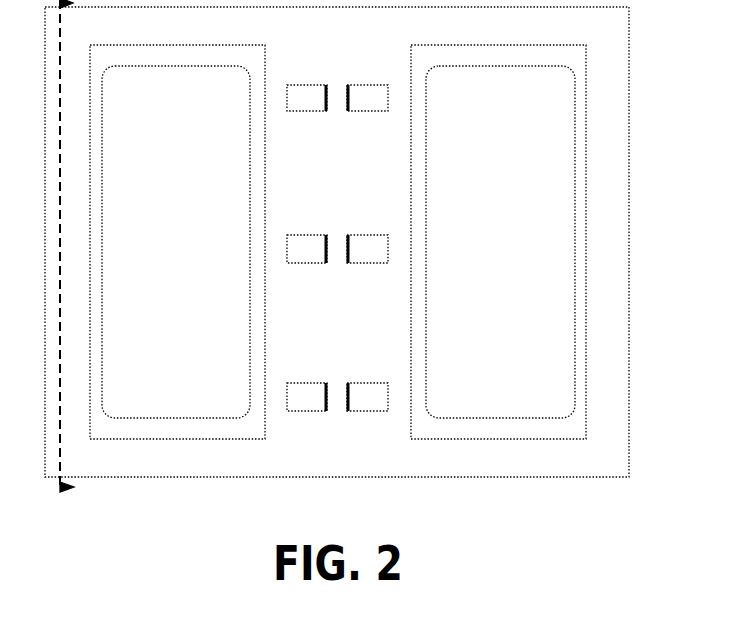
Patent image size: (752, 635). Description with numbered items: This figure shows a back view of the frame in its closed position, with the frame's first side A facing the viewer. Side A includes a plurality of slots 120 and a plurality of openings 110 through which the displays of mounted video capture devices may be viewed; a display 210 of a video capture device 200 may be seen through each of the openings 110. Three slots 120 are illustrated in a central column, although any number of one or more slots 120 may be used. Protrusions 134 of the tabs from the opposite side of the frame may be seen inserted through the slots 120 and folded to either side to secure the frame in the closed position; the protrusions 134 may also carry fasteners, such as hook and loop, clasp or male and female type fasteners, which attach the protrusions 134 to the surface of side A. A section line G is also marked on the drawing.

The openings 110 is at (587, 50).
The slots 120 is at (325, 110).
The protrusion portion 134 is at (308, 87).
The video capture device 200 is at (577, 112).
The display 210 is at (563, 157).
The section line G is at (60, 110).
The first side A is at (346, 461).